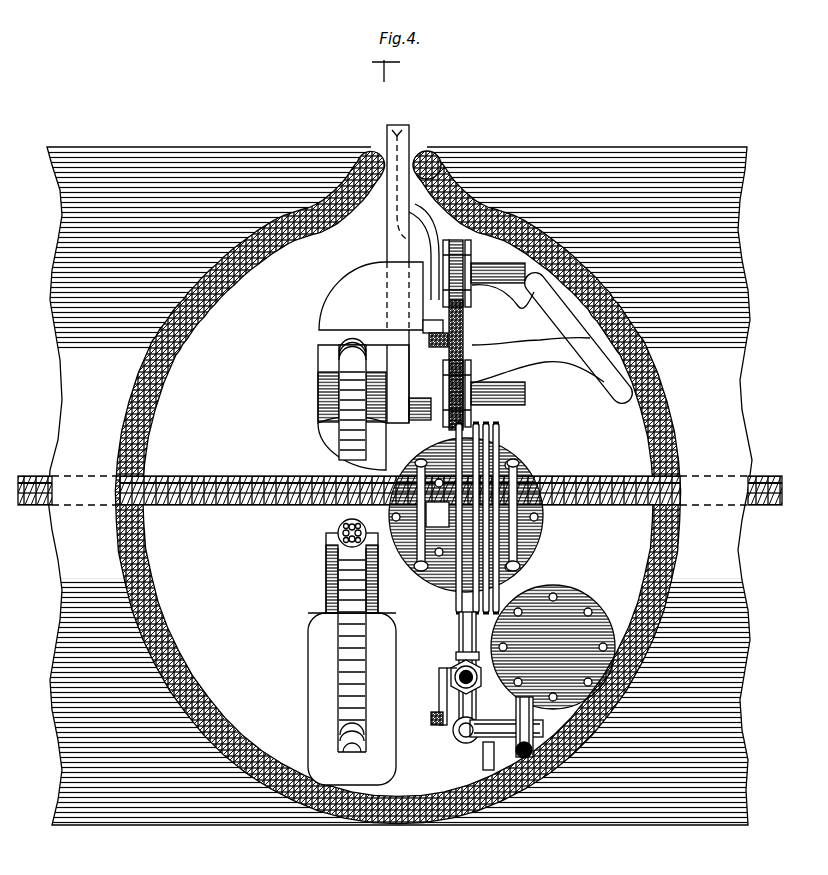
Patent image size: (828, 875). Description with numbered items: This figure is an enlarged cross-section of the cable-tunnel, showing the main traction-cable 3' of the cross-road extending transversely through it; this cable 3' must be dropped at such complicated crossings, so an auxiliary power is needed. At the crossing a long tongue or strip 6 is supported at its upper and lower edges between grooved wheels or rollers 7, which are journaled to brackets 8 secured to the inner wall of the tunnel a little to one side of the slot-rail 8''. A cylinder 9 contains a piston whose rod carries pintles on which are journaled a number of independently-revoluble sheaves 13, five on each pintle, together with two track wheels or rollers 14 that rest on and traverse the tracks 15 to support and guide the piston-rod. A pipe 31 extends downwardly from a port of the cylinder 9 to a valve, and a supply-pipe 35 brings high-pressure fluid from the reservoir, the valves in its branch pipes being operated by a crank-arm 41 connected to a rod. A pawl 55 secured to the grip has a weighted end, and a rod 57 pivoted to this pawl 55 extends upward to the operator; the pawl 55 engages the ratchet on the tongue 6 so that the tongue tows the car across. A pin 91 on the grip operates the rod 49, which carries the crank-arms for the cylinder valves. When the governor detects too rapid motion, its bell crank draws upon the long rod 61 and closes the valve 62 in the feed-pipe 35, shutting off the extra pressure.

The casing lip 8'' is at (436, 150).
The rod 57 is at (428, 232).
The grooved wheels or rollers 7 is at (481, 365).
The tongue or strip 6 is at (463, 340).
The pawl 55 is at (428, 330).
The brackets 8 is at (546, 334).
The pin 91 is at (416, 402).
The track wheels or rollers 14 is at (522, 470).
The main traction-cable 3' is at (400, 621).
The tracks 15 is at (536, 572).
The sheaves 13 is at (513, 594).
The cylinder 9 is at (543, 540).
The pipe 31 is at (458, 645).
The crank-arm 41 is at (439, 700).
The rod 49 is at (422, 724).
The valve 62 is at (462, 742).
The long rod 61 is at (510, 748).
The supply-pipe 35 is at (503, 812).